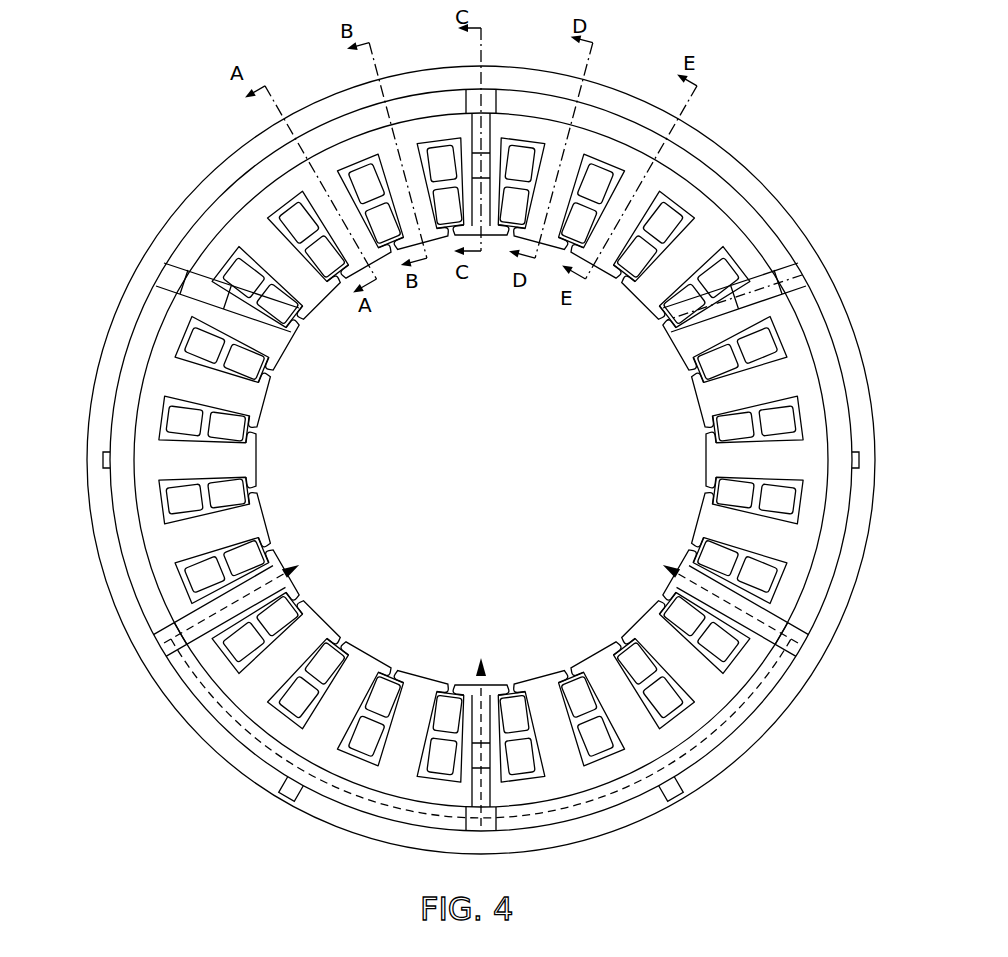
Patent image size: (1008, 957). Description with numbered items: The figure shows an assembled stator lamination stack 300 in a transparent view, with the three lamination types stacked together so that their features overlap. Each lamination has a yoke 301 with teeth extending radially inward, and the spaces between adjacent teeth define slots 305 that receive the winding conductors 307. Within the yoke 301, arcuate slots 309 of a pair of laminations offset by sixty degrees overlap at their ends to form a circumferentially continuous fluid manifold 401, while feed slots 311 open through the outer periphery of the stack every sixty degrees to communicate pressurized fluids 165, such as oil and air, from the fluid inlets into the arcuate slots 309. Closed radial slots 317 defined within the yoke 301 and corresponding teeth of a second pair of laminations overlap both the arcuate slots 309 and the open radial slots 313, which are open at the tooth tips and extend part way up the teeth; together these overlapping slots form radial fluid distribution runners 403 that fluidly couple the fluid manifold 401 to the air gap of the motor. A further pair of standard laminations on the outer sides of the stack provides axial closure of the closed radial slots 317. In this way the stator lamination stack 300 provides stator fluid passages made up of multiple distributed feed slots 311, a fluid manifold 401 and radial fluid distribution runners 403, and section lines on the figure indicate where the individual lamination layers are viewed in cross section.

The stator lamination stack 300 is at (184, 150).
The yoke 301 is at (737, 152).
The slots 305 is at (263, 384).
The winding conductors 307 is at (242, 490).
The arcuate slots 309 is at (110, 372).
The feed slots 311 is at (103, 463).
The open radial slots 313 is at (706, 598).
The closed radial slots 317 is at (795, 627).
The pressurized fluids 165 is at (290, 802).
The fluid manifold 401 is at (131, 304).
The radial fluid distribution runners 403 is at (707, 332).